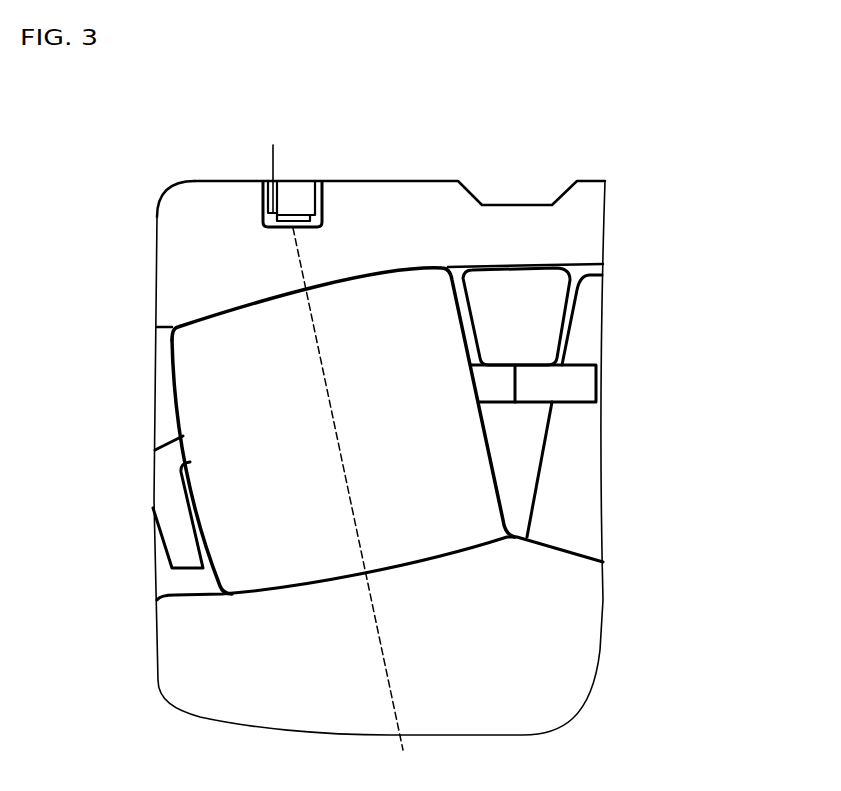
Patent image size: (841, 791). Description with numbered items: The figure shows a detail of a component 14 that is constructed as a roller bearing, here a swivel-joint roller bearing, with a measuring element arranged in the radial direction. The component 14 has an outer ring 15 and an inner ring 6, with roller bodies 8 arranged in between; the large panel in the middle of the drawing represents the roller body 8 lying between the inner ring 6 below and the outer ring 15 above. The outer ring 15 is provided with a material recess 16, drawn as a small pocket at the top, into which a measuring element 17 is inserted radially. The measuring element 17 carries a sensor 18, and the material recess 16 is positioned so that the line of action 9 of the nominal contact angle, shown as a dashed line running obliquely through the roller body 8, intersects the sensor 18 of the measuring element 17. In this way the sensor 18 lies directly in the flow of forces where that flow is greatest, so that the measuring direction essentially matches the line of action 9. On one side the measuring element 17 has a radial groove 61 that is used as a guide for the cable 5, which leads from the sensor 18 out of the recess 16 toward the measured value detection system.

The component 14 is at (650, 242).
The outer ring 15 is at (388, 207).
The inner ring 6 is at (568, 602).
The roller bodies 8 is at (197, 358).
The line of action 9 is at (382, 650).
The material recess 16 is at (320, 203).
The measuring element 17 is at (288, 197).
The sensor 18 is at (300, 217).
The radial groove 61 is at (270, 197).
The cable 5 is at (272, 158).